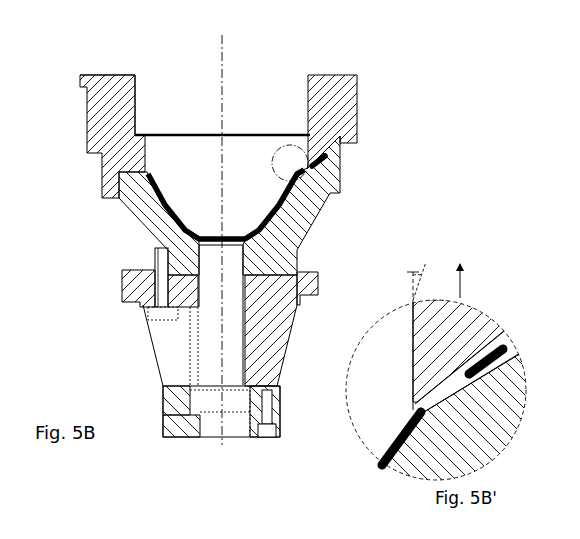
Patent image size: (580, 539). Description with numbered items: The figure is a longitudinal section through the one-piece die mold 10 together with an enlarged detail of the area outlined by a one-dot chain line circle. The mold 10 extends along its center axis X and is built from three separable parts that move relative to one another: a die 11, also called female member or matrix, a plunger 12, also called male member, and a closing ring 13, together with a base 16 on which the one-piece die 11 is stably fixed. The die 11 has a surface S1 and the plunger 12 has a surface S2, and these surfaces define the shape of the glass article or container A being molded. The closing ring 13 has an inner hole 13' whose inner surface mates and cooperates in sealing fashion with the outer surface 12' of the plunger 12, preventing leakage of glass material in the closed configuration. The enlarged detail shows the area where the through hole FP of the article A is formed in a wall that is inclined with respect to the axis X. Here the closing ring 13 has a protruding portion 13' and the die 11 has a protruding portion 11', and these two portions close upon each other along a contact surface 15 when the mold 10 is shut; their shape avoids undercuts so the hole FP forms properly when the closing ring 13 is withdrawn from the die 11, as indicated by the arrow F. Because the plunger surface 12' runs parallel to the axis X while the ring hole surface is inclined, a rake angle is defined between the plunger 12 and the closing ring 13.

In FIG. 5B, the mold 10 is at (91, 56).
In FIG. 5B, the die 11 is at (226, 205).
In FIG. 5B', the die 11 is at (461, 427).
In FIG. 5B, the plunger 12 is at (219, 121).
In FIG. 5B', the plunger 12 is at (382, 354).
In FIG. 5B, the closing ring 13 is at (230, 136).
In FIG. 5B', the closing ring 13 is at (479, 351).
In FIG. 5B', the contact surface 15 is at (494, 393).
In FIG. 5B, the base 16 is at (158, 348).
In FIG. 5B, the glass article A is at (262, 231).
In FIG. 5B', the glass article A is at (503, 346).
In FIG. 5B, the through hole FP is at (148, 174).
In FIG. 5B', the through hole FP is at (468, 374).
In FIG. 5B, the center axis X is at (224, 43).
In FIG. 5B', the surface of the die S1 is at (387, 468).
In FIG. 5B', the surface of the plunger S2 is at (378, 463).
In FIG. 5B', the protruding portion of the die 11' is at (477, 388).
In FIG. 5B', the outer surface of the plunger 12' is at (401, 336).
In FIG. 5B', the inner hole / protruding portion of the closing ring 13' is at (472, 331).
In FIG. 5B', the force direction F is at (462, 278).